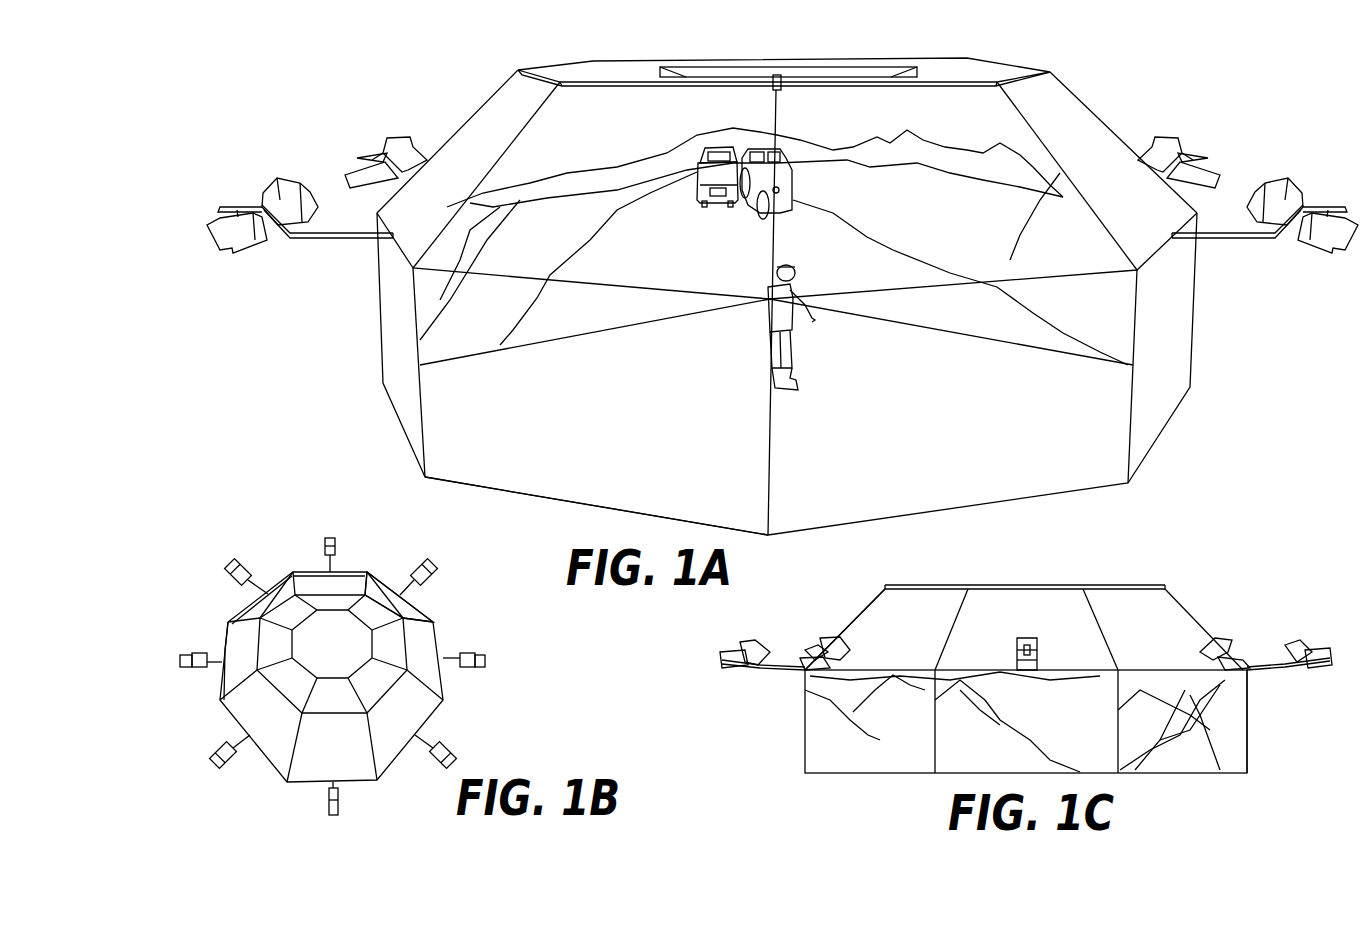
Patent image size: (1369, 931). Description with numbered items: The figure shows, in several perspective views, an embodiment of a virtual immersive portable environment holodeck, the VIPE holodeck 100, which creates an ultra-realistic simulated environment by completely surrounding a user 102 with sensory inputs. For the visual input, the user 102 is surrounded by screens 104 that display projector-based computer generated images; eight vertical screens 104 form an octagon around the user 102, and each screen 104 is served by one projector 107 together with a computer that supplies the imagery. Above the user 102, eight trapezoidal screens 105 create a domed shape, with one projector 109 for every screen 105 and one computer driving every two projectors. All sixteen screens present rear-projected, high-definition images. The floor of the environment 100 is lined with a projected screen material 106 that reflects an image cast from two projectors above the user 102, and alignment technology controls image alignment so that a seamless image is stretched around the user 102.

In FIG. 1A, the VIPE holodeck 100 is at (1295, 107).
In FIG. 1B, the VIPE holodeck 100 is at (230, 539).
In FIG. 1C, the VIPE holodeck 100 is at (1337, 585).
In FIG. 1A, the user 102 is at (795, 332).
In FIG. 1A, the screens 104 is at (963, 187).
In FIG. 1C, the screens 104 is at (1238, 713).
In FIG. 1A, the trapezoidal screens 105 is at (470, 150).
In FIG. 1B, the trapezoidal screens 105 is at (423, 640).
In FIG. 1C, the trapezoidal screens 105 is at (867, 630).
In FIG. 1A, the projected screen material 106 is at (643, 430).
In FIG. 1A, the projector 107 is at (307, 187).
In FIG. 1A, the projector 109 is at (220, 253).